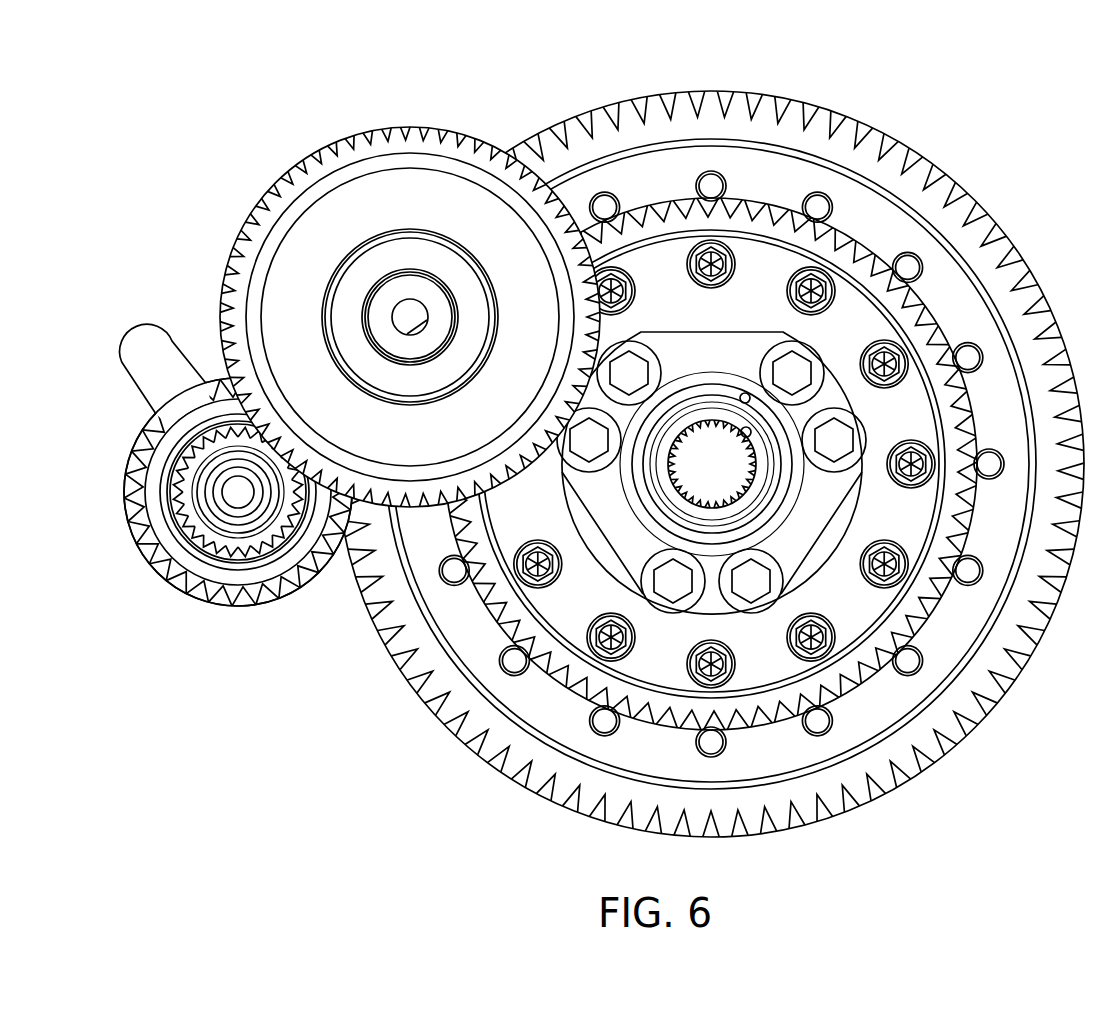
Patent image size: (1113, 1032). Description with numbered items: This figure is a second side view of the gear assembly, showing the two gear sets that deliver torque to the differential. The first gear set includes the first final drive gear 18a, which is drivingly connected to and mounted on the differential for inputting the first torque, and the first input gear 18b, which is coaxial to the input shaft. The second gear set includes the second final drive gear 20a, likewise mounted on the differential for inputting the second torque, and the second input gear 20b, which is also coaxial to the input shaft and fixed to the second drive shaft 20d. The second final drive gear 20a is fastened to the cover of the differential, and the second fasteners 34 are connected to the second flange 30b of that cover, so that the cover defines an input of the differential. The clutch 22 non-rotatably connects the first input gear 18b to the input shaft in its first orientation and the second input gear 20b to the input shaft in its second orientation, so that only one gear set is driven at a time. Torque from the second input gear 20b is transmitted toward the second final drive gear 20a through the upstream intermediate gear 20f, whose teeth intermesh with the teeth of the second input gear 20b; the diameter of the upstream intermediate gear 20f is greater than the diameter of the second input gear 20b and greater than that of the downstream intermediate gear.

The first final drive gear 18a is at (651, 104).
The first input gear 18b is at (248, 583).
The second final drive gear 20a is at (871, 312).
The second input gear 20b is at (177, 505).
The second drive shaft 20d is at (215, 523).
The upstream intermediate gear 20f is at (367, 150).
The clutch 22 is at (142, 362).
The second flange 30b is at (892, 318).
The second fasteners 34 is at (900, 358).